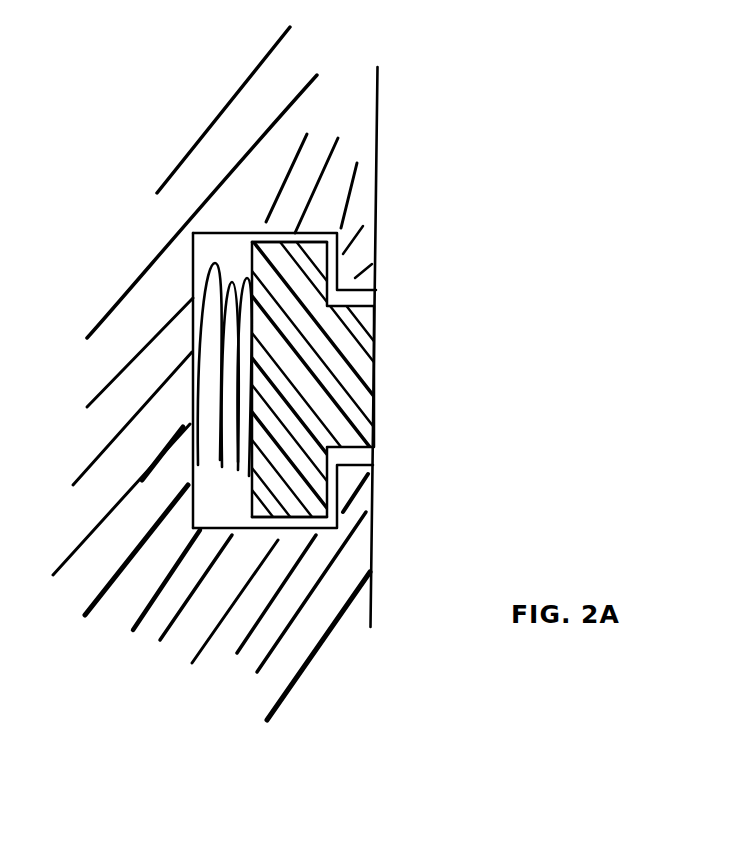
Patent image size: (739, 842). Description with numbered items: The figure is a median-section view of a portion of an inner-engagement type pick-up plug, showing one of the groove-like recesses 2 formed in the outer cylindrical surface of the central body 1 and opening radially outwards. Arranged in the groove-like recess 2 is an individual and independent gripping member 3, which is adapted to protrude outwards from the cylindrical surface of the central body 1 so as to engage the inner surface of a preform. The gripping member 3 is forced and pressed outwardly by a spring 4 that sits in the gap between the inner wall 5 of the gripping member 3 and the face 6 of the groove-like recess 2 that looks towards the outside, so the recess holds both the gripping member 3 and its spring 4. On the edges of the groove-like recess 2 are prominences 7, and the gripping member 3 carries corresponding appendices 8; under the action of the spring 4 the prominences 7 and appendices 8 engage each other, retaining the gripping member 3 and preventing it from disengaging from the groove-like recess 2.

The central body 1 is at (378, 113).
The groove-like recess 2 is at (213, 250).
The gripping member 3 is at (352, 370).
The spring 4 is at (228, 341).
The inner wall 5 is at (256, 330).
The face 6 is at (193, 268).
The prominence 7 is at (290, 245).
The appendix 8 is at (377, 270).